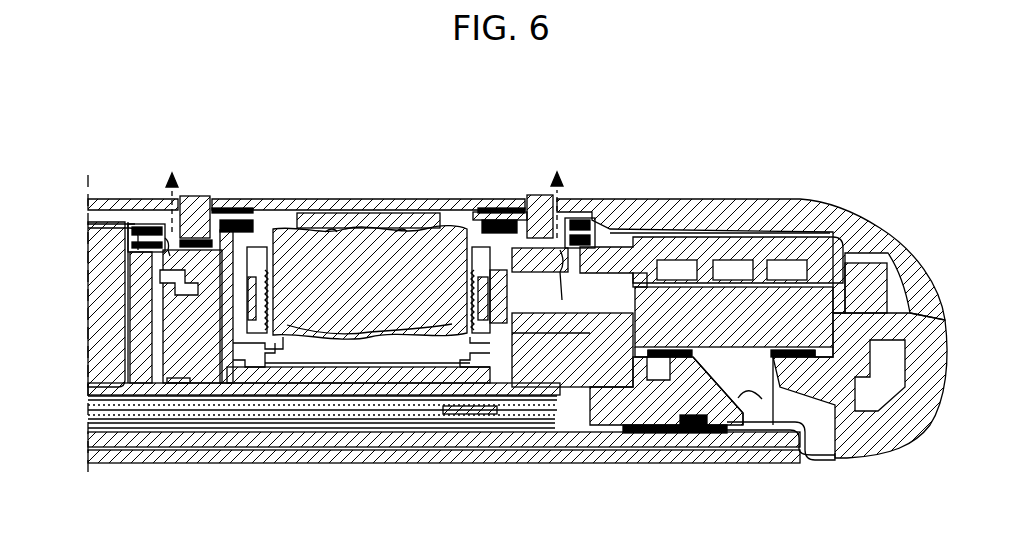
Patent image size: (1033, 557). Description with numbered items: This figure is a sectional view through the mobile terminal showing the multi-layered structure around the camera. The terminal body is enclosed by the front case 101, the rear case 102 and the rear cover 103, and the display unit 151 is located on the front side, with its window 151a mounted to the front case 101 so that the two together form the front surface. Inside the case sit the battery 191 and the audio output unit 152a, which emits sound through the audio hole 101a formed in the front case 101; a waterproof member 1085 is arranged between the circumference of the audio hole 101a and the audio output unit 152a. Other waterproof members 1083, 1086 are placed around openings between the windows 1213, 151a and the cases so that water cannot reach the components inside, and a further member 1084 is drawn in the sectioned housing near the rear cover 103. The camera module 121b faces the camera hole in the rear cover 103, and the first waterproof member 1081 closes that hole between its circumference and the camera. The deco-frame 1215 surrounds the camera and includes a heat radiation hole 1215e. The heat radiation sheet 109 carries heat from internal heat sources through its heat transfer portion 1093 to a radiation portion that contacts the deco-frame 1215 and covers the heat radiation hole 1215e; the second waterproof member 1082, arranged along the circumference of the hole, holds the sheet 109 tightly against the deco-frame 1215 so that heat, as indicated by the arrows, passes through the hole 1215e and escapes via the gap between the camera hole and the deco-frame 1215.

The front case 101 is at (867, 430).
The audio hole 101a is at (742, 396).
The rear case 102 is at (818, 270).
The rear cover 103 is at (760, 217).
The heat radiation sheet 109 is at (592, 220).
The first waterproof member 1081 is at (142, 228).
The second waterproof member 1082 is at (197, 237).
The waterproof member 1083 is at (493, 207).
The fourth magnet 1084 is at (870, 260).
The waterproof member 1085 is at (663, 358).
The waterproof member 1086 is at (640, 434).
The heat transfer portion 1093 is at (110, 226).
The camera module 121b is at (333, 253).
The window 1213 is at (280, 203).
The deco-frame 1215 is at (545, 205).
The heat radiation hole 1215e is at (170, 242).
The display unit 151 is at (300, 405).
The window 151a is at (483, 443).
The audio output unit 152a is at (680, 310).
The battery 191 is at (110, 303).